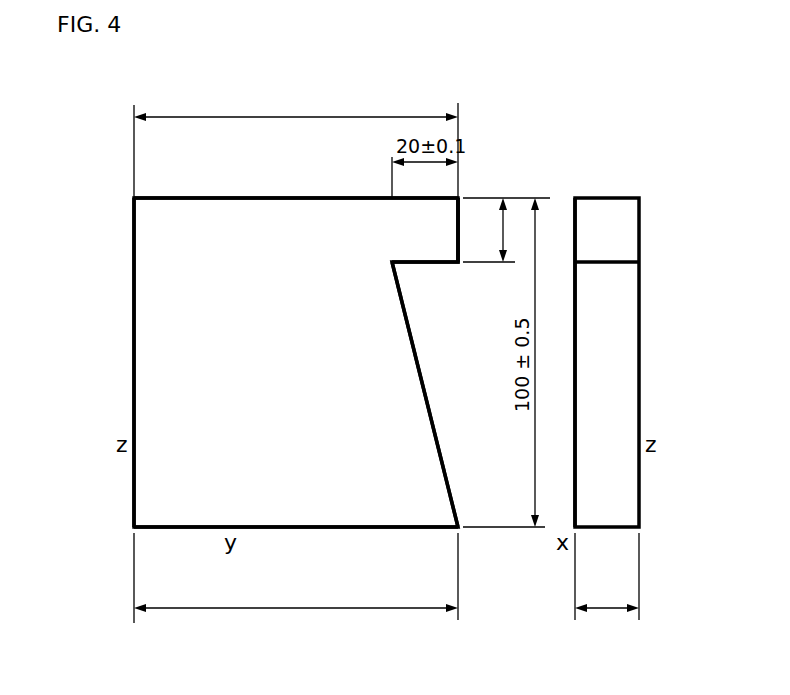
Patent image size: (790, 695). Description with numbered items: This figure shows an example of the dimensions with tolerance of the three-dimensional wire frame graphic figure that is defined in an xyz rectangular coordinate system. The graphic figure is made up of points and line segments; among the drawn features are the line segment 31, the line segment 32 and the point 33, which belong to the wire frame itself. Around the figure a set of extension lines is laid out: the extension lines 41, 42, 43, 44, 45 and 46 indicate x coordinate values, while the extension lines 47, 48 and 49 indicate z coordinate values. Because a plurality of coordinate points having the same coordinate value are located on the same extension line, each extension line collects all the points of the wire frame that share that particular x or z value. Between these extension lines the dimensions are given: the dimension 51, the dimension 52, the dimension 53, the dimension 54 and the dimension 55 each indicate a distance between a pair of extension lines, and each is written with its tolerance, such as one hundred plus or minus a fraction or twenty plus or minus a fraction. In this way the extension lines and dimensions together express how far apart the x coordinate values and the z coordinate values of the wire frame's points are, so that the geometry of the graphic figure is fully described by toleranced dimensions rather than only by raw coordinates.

The line segment 31 is at (420, 261).
The line segment 32 is at (222, 197).
The point 33 is at (301, 263).
The extension line 41 is at (642, 620).
The extension line 42 is at (574, 620).
The extension line 43 is at (134, 139).
The extension line 44 is at (462, 600).
The extension line 45 is at (392, 161).
The extension line 46 is at (462, 128).
The extension line 47 is at (500, 533).
The extension line 48 is at (490, 268).
The extension line 49 is at (521, 198).
The dimension 51 is at (604, 588).
The dimension 52 is at (288, 590).
The dimension 53 is at (318, 70).
The dimension 54 is at (512, 382).
The dimension 55 is at (500, 224).